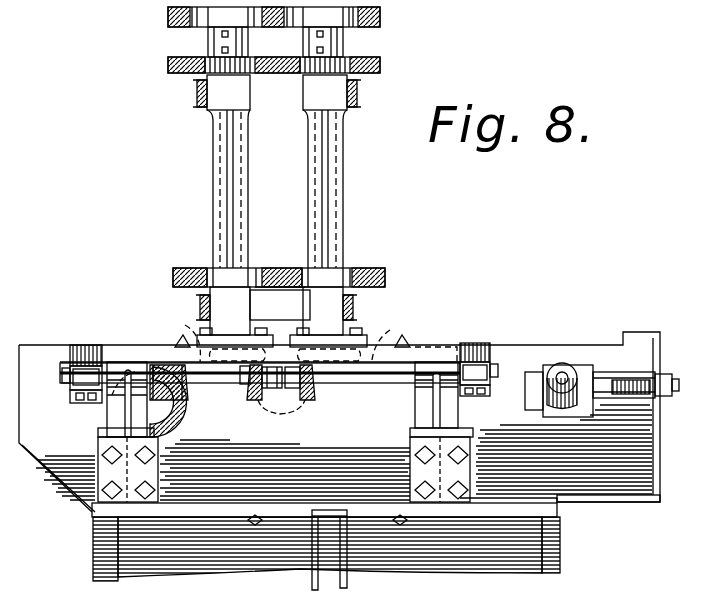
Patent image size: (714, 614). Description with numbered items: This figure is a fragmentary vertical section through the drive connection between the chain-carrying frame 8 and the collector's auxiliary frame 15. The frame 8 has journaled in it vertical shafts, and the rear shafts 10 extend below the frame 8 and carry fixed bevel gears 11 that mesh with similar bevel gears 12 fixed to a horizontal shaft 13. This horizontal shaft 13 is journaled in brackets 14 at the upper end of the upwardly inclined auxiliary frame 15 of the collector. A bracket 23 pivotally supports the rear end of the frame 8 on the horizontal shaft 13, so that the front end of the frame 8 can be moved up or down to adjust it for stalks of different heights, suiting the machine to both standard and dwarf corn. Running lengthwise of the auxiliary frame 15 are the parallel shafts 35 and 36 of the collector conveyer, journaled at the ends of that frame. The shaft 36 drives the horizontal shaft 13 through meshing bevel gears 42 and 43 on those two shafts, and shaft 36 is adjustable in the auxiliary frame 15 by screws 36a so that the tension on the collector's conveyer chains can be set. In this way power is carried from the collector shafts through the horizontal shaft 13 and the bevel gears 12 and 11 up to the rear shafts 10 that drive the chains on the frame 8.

The frame 8 is at (248, 145).
The rear shafts 10 is at (222, 205).
The bevel gears 11 is at (308, 336).
The bevel gears 12 is at (256, 402).
The horizontal shaft 13 is at (384, 379).
The brackets 14 is at (416, 404).
The auxiliary frame 15 is at (598, 505).
The bracket 23 is at (422, 347).
The shaft 35 is at (108, 404).
The shaft 36 is at (564, 376).
The screws 36a is at (632, 392).
The bevel gear 42 is at (183, 414).
The bevel gear 43 is at (188, 393).